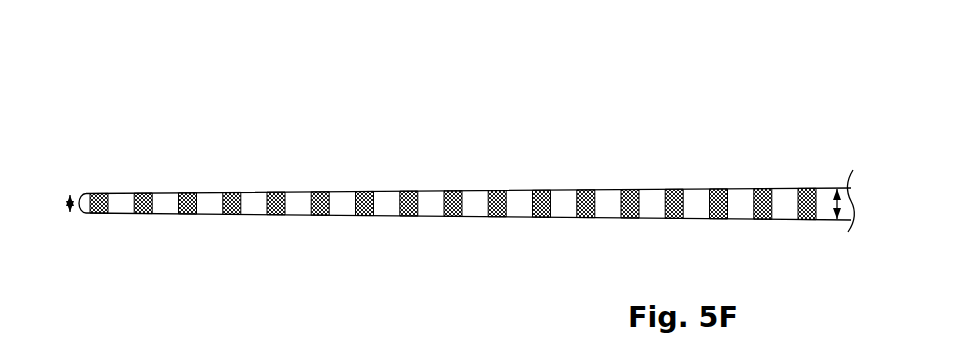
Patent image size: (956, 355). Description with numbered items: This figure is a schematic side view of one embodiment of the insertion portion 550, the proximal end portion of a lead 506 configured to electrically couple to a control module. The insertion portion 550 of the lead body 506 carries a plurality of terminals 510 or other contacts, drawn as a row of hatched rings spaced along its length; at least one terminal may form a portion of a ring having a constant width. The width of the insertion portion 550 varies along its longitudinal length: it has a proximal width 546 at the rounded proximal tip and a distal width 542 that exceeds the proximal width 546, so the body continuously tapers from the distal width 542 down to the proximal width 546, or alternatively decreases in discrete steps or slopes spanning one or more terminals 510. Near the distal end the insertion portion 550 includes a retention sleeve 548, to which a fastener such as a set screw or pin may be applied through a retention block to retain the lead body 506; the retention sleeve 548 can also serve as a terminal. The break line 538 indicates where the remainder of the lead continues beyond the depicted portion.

The lead 506 is at (800, 47).
The insertion portion 550 is at (547, 122).
The terminals 510 is at (775, 178).
The retention sleeve 548 is at (810, 190).
The proximal width 546 is at (71, 194).
The distal width 542 is at (838, 221).
The lead body break 538 is at (848, 243).